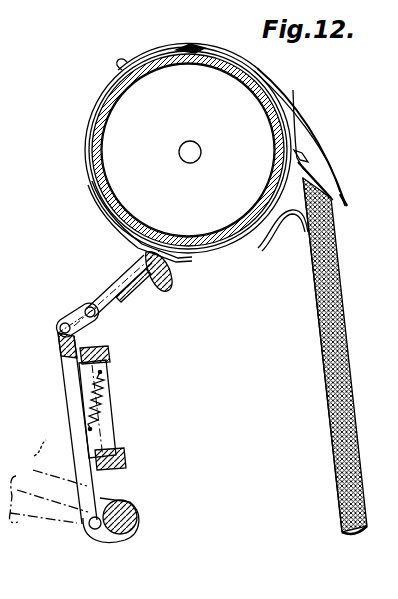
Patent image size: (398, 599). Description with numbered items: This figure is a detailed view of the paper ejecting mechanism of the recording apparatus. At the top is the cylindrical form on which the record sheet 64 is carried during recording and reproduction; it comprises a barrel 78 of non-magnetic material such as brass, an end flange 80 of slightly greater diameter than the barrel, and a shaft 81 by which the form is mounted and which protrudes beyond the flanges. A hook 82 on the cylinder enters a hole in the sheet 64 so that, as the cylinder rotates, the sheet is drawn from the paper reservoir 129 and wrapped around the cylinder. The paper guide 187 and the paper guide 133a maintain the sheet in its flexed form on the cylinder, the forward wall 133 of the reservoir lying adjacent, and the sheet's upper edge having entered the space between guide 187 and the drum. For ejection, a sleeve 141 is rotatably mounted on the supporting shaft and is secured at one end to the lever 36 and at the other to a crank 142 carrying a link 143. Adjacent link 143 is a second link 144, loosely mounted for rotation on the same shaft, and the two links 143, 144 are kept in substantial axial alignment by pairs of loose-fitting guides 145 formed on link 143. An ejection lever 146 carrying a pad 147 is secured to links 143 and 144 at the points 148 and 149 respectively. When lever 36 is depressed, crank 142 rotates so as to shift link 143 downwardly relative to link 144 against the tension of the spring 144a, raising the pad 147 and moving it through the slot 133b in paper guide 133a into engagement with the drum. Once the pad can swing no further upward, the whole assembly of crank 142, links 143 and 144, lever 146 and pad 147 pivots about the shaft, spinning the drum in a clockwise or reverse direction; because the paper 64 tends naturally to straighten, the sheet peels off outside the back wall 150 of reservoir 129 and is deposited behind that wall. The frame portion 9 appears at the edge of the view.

The frame 9 is at (4, 340).
The lever 36 is at (48, 481).
The sheet 64 is at (98, 121).
The barrel 78 is at (122, 82).
The end flange 80 is at (112, 85).
The shaft 81 is at (190, 163).
The hook 82 is at (193, 58).
The paper reservoir 129 is at (340, 362).
The forward wall 133 is at (318, 319).
The paper guide 133a is at (255, 235).
The slot 133b is at (178, 263).
The sleeve 141 is at (138, 515).
The crank 142 is at (98, 530).
The link 143 is at (73, 429).
The link 144 is at (108, 408).
The spring 144a is at (92, 423).
The guides 145 is at (110, 356).
The ejection lever 146 is at (122, 298).
The pad 147 is at (169, 281).
The securing point 148 is at (60, 325).
The securing point 149 is at (88, 306).
The back wall 150 is at (336, 208).
The paper guide 187 is at (302, 98).